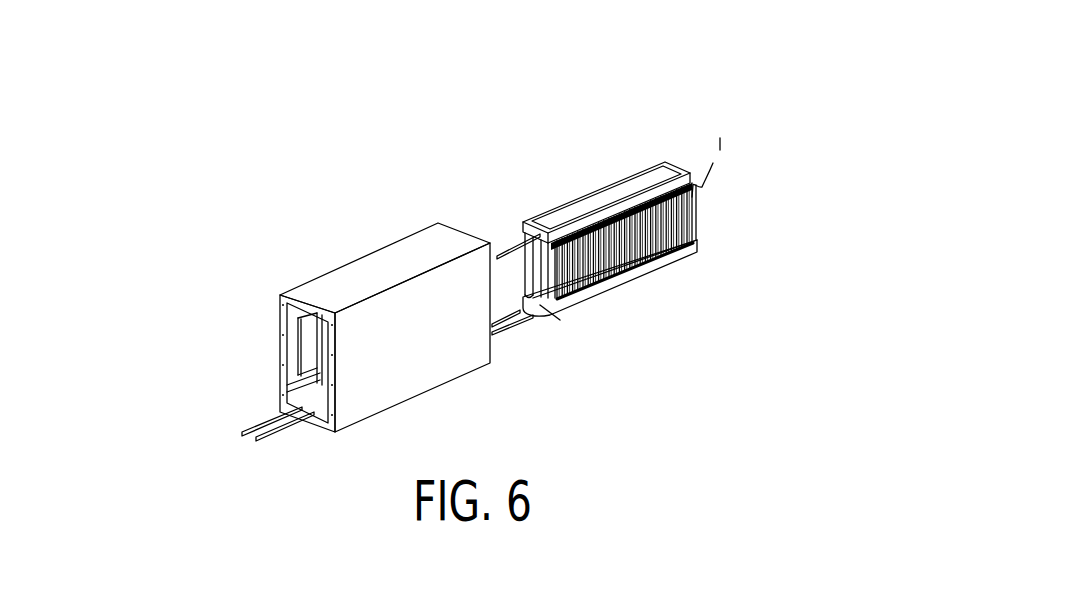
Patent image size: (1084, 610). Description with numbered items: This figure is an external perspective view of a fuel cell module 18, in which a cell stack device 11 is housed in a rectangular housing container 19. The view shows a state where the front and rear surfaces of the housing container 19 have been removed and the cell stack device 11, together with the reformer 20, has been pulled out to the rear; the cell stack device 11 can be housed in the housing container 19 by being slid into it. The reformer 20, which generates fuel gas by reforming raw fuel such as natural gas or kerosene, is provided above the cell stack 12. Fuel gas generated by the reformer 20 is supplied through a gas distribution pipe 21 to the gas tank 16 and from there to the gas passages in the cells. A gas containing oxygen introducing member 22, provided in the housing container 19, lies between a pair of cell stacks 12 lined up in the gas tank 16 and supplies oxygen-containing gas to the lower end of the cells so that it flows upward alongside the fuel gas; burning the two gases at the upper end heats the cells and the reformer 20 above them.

The fuel cell module 18 is at (350, 85).
The housing container 19 is at (386, 257).
The gas containing oxygen introducing member 22 is at (322, 333).
The gas distribution pipe 21 is at (523, 229).
The reformer 20 is at (530, 222).
The cell stack device 11 is at (629, 155).
The cell stack 12 is at (567, 298).
The gas tank 16 is at (562, 313).